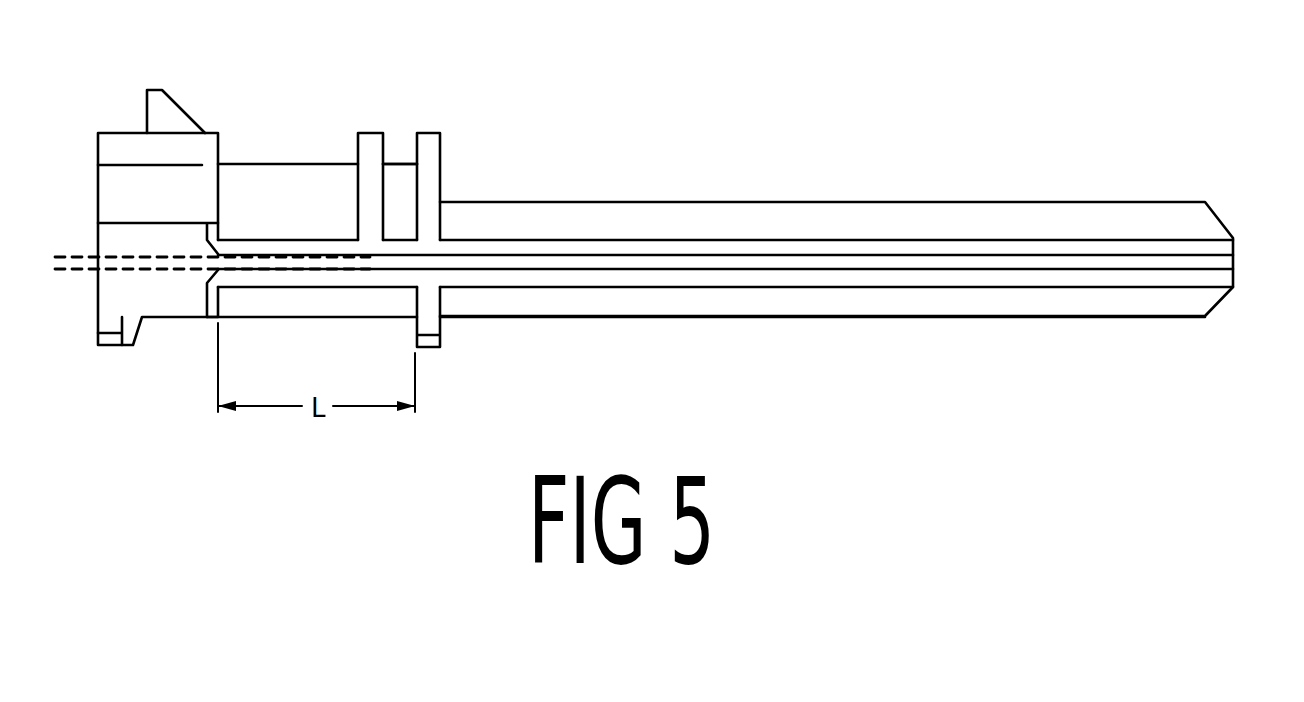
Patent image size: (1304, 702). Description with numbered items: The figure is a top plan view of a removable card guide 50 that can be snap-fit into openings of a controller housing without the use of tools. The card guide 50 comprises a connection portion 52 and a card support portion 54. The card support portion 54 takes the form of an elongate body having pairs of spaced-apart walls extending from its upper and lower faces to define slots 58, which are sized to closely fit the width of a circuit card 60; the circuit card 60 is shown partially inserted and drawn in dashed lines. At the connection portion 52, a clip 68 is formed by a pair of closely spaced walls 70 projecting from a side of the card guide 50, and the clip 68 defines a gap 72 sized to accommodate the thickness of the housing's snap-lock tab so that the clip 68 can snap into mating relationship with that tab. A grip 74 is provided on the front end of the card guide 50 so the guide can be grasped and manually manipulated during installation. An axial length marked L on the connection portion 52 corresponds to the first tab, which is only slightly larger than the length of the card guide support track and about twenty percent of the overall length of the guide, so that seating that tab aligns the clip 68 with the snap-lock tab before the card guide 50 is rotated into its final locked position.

The card guide 50 is at (634, 223).
The connection portion 52 is at (323, 136).
The card support portion 54 is at (984, 200).
The slots 58 is at (1108, 262).
The circuit card 60 is at (63, 273).
The clip 68 is at (450, 155).
The walls 70 is at (358, 195).
The gap 72 is at (399, 148).
The grip 74 is at (122, 146).